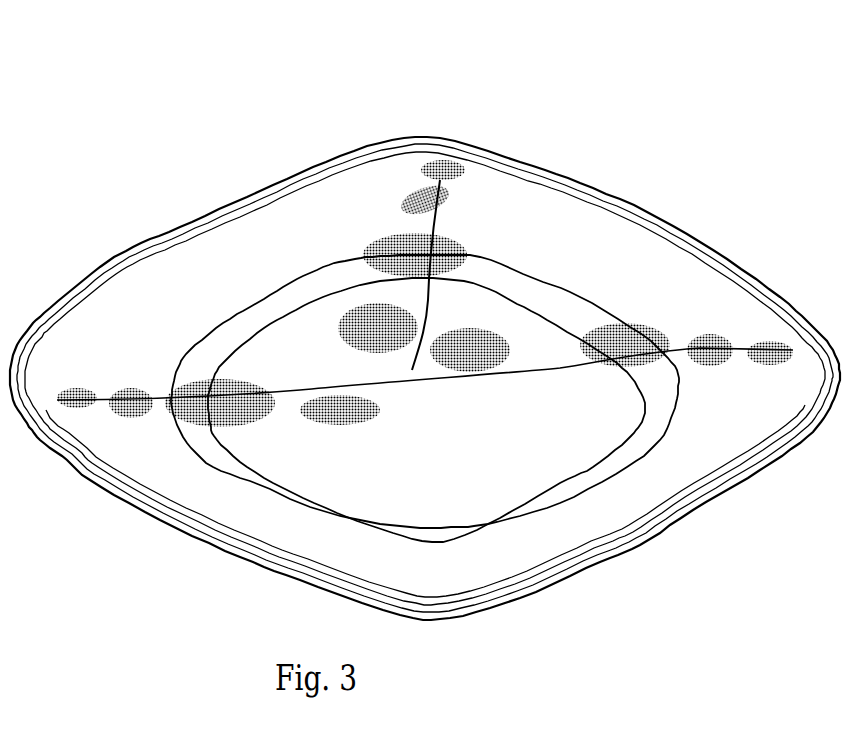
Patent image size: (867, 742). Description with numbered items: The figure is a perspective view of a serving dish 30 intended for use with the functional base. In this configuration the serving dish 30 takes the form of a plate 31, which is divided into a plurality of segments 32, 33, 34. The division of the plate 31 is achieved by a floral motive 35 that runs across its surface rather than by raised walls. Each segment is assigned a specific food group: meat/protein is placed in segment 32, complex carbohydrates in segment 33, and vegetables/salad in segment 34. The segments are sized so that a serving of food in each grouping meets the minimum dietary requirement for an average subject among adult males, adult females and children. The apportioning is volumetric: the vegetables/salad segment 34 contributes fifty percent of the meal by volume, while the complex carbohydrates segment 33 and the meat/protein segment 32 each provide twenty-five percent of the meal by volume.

The serving dish 30 is at (618, 118).
The plate 31 is at (758, 473).
The segment 32 is at (573, 266).
The segment 33 is at (263, 258).
The segment 34 is at (433, 500).
The floral motive 35 is at (348, 408).